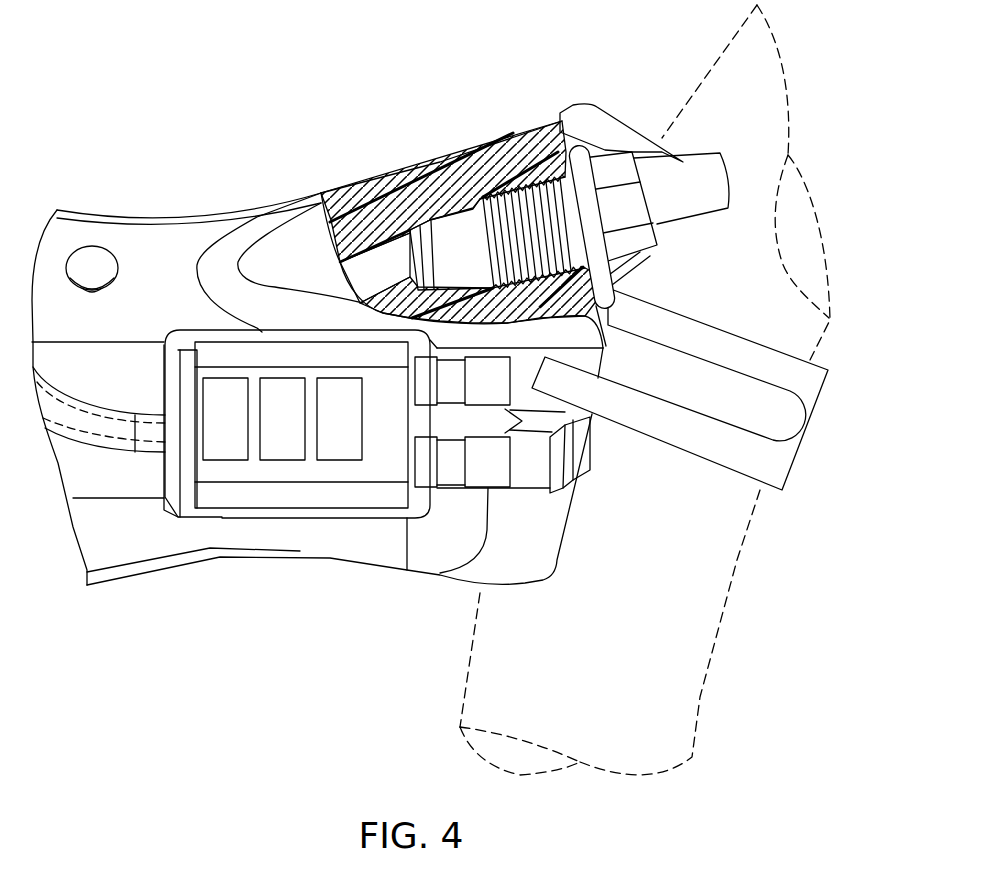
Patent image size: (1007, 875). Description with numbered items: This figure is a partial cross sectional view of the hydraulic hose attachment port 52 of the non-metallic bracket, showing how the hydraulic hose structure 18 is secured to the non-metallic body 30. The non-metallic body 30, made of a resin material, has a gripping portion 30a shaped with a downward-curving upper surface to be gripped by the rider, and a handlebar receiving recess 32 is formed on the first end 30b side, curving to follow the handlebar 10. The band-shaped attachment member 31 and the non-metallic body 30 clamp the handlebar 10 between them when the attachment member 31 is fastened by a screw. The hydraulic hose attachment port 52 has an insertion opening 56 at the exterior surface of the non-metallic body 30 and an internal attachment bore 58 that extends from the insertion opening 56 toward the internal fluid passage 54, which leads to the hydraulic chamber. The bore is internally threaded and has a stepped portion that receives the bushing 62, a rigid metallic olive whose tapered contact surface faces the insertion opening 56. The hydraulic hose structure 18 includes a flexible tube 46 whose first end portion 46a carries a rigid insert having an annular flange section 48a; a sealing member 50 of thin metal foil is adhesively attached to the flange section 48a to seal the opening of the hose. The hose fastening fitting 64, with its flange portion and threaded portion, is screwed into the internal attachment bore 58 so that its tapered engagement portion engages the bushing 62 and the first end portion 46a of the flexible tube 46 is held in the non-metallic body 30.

The handlebar 10 is at (700, 697).
The hydraulic hose structure 18 is at (734, 169).
The non-metallic body 30 is at (145, 567).
The gripping portion 30a is at (170, 213).
The first end 30b is at (560, 547).
The attachment member 31 is at (693, 457).
The handlebar receiving recess 32 is at (578, 460).
The flexible tube 46 is at (425, 237).
The first end portion 46a is at (652, 172).
The annular flange section 48a is at (390, 195).
The sealing member 50 is at (343, 200).
The hydraulic hose attachment port 52 is at (503, 190).
The internal fluid passage 54 is at (355, 282).
The insertion opening 56 is at (583, 232).
The internal attachment bore 58 is at (445, 243).
The bushing 62 is at (465, 290).
The hose fastening fitting 64 is at (617, 138).